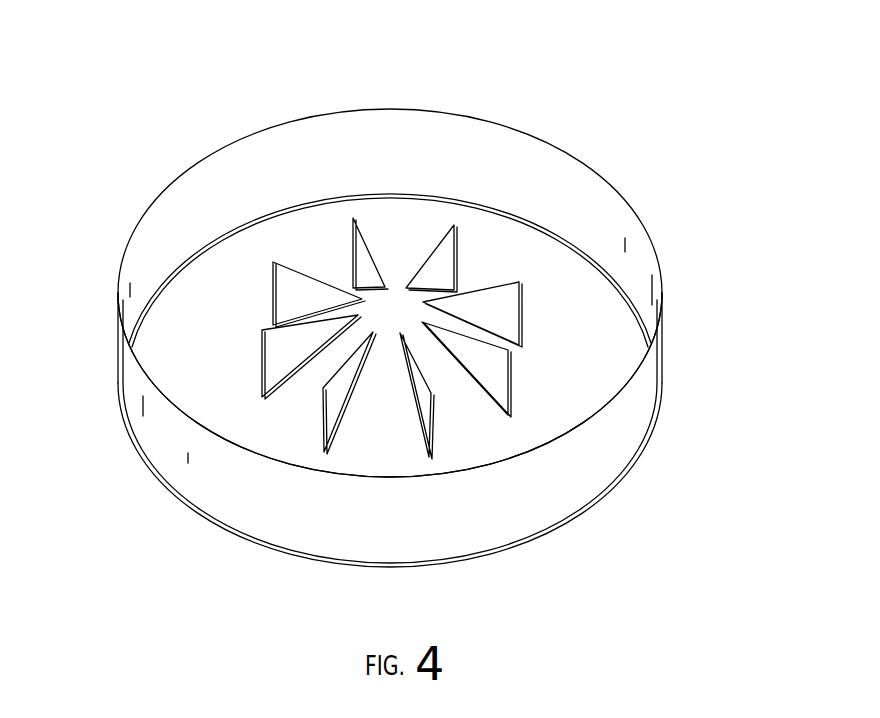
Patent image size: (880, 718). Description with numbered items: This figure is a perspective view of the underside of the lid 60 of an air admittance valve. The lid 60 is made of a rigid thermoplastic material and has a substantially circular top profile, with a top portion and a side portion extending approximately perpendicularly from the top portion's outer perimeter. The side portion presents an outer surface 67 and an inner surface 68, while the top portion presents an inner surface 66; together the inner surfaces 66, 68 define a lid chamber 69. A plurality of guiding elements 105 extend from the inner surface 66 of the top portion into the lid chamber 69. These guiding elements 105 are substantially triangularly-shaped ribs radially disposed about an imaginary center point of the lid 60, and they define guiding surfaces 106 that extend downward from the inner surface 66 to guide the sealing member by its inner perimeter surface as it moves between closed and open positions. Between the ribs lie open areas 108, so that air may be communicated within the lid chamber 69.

The lid 60 is at (381, 305).
The inner surface of the top portion 66 is at (443, 375).
The outer surface of the side portion 67 is at (480, 160).
The inner surface of the side portion 68 is at (270, 511).
The lid chamber 69 is at (622, 343).
The guiding elements 105 is at (282, 360).
The guiding surfaces 106 is at (270, 307).
The open areas 108 is at (278, 292).